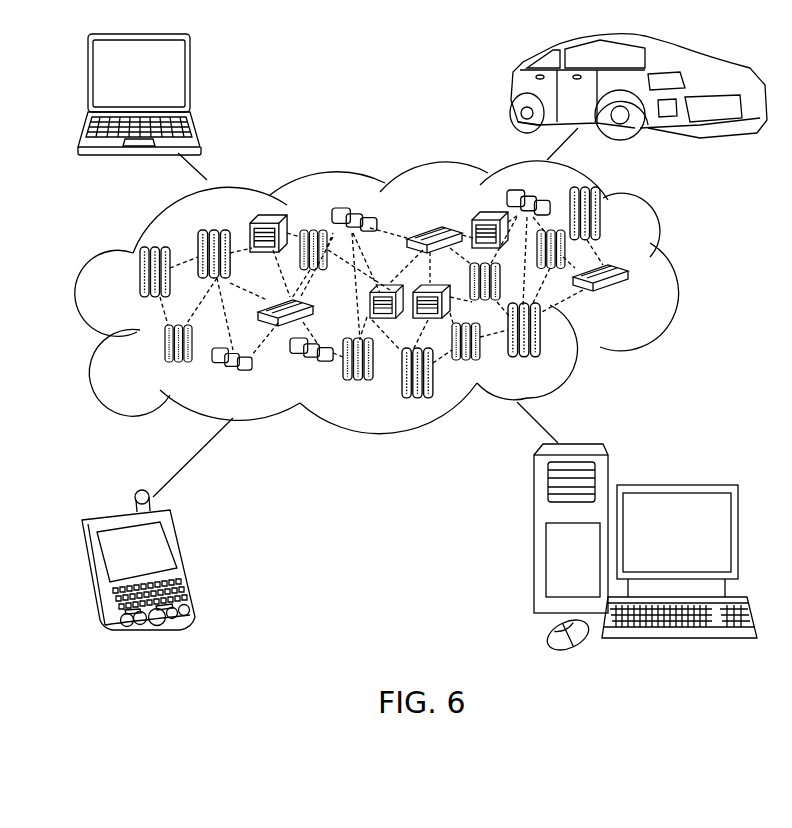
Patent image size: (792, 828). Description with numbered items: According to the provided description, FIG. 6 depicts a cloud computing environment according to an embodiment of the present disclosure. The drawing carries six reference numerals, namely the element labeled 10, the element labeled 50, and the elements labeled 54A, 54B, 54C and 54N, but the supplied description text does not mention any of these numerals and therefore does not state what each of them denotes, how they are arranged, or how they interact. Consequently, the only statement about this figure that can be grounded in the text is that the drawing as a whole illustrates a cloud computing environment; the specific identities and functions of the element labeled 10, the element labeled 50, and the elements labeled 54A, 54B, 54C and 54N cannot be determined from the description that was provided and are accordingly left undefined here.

The system 10 is at (636, 300).
The cloud computing environment / network 50 is at (674, 273).
The personal digital assistant or cellular telephone 54A is at (183, 557).
The desktop computer 54B is at (673, 484).
The laptop computer 54C is at (192, 82).
The automobile computer system 54N is at (512, 88).